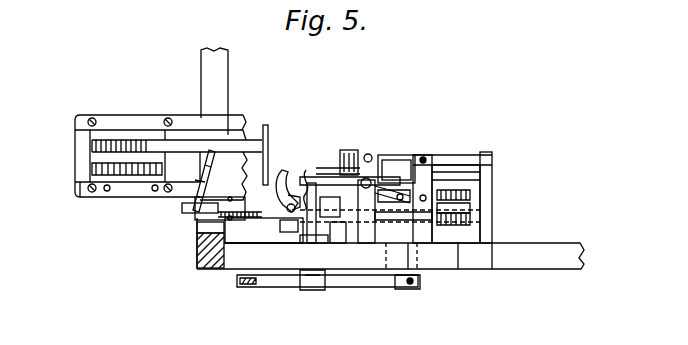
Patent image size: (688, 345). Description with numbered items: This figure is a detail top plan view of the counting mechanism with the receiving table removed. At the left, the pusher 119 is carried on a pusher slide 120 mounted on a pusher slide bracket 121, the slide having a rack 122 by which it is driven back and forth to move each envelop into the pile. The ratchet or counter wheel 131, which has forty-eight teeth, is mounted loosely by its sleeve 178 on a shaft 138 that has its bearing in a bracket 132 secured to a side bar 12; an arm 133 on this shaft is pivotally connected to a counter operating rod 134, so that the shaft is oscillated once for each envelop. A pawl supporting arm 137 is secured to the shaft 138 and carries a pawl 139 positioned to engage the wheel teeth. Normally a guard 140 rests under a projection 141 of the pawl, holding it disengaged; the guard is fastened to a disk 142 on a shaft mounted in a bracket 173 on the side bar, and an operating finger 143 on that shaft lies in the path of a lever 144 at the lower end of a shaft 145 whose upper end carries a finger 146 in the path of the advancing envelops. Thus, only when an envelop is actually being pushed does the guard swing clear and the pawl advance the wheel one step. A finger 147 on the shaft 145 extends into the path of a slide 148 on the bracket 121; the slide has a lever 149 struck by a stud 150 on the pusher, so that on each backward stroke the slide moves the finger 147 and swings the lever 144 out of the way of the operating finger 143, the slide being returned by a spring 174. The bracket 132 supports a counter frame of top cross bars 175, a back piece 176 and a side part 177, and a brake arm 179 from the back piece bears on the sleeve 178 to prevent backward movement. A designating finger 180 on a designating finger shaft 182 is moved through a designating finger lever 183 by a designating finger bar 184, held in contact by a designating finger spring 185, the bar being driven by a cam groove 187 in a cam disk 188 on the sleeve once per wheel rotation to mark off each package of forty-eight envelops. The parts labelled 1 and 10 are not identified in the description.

The post 1 is at (218, 70).
The frame block 10 is at (199, 260).
The side bar 12 is at (570, 266).
The pusher 119 is at (265, 128).
The pusher slide 120 is at (92, 157).
The pusher slide bracket 121 is at (84, 191).
The rack 122 is at (130, 177).
The ratchet or counter wheel 131 is at (470, 218).
The bracket 132 is at (458, 245).
The arm 133 is at (352, 287).
The counter operating rod 134 is at (252, 287).
The pawl supporting arm 137 is at (418, 246).
The shaft 138 is at (403, 289).
The pawl 139 is at (345, 225).
The guard 140 is at (322, 182).
The projection 141 is at (310, 225).
The disk 142 is at (300, 238).
The operating finger 143 is at (280, 225).
The lever 144 is at (307, 170).
The shaft 145 is at (290, 196).
The finger 146 is at (285, 170).
The finger 147 is at (280, 214).
The slide 148 is at (177, 157).
The lever 149 is at (198, 181).
The stud 150 is at (212, 152).
The bracket 173 is at (292, 242).
The spring 174 is at (197, 213).
The cross bars 175 is at (430, 158).
The back piece 176 is at (470, 166).
The side part 177 is at (462, 164).
The sleeve 178 is at (421, 156).
The brake arm 179 is at (486, 153).
The designating finger 180 is at (348, 150).
The designating finger shaft 182 is at (375, 168).
The designating finger lever 183 is at (367, 160).
The designating finger bar 184 is at (395, 243).
The designating finger spring 185 is at (318, 243).
The cam groove 187 is at (463, 196).
The cam disk 188 is at (470, 206).